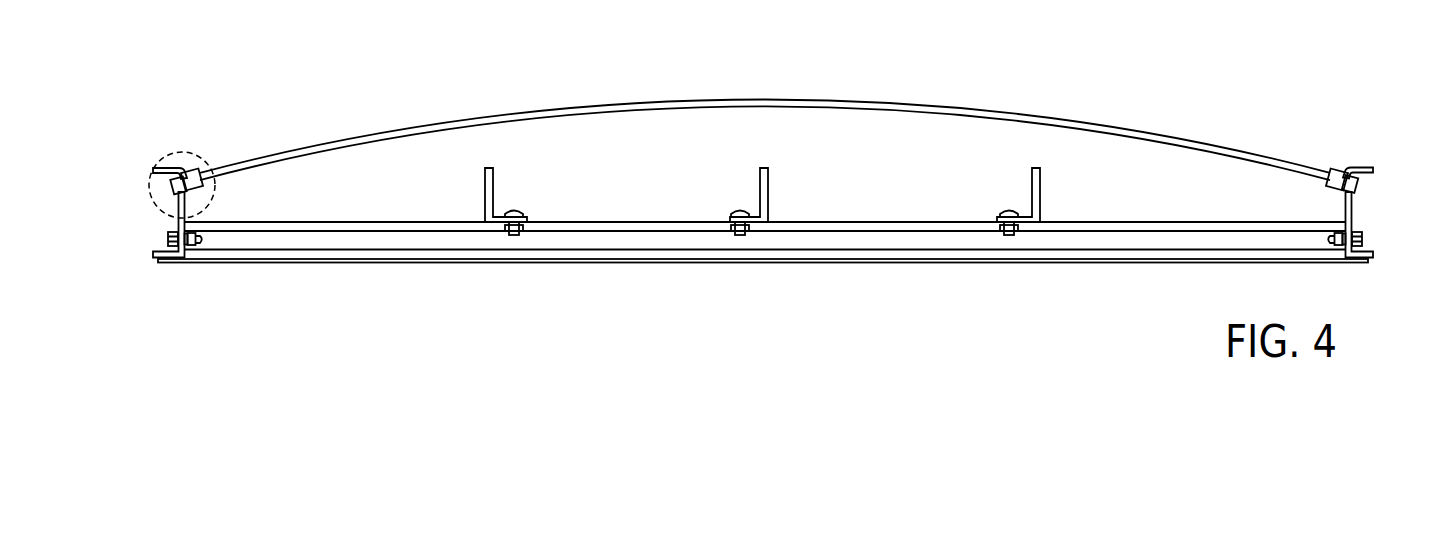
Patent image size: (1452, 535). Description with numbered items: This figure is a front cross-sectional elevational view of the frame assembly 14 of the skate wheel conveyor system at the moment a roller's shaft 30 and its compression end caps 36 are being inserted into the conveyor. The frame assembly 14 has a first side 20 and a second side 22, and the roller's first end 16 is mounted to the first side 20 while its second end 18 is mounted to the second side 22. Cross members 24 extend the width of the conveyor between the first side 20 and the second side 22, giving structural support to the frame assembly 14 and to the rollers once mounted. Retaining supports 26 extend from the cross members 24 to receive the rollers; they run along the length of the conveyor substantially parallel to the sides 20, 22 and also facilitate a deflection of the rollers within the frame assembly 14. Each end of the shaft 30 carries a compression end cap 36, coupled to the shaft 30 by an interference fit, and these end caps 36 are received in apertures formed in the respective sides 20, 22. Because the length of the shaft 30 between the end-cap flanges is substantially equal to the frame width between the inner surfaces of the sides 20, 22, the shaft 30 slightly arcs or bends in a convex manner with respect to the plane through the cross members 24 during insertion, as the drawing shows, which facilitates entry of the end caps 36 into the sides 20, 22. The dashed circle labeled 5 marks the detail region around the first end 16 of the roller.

The detail region (FIG. 5) 5 is at (182, 151).
The frame assembly 14 is at (751, 257).
The first end 16 is at (190, 170).
The second end 18 is at (1355, 176).
The first side 20 is at (176, 222).
The second side 22 is at (1349, 222).
The cross member 24 is at (830, 243).
The retaining support 26 is at (487, 190).
The shaft 30 is at (766, 100).
The compression end cap 36 is at (1356, 186).